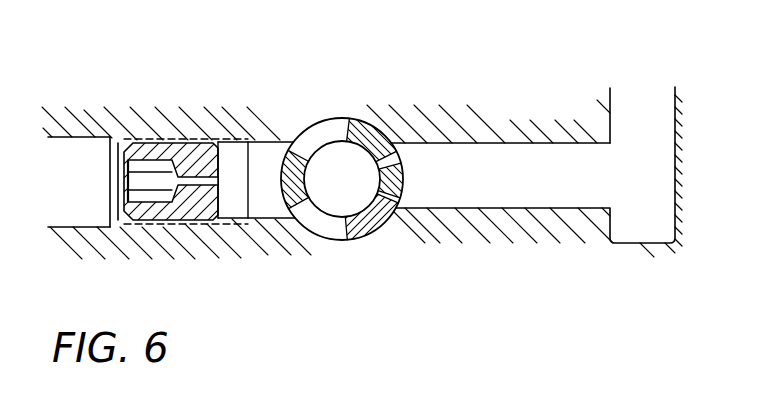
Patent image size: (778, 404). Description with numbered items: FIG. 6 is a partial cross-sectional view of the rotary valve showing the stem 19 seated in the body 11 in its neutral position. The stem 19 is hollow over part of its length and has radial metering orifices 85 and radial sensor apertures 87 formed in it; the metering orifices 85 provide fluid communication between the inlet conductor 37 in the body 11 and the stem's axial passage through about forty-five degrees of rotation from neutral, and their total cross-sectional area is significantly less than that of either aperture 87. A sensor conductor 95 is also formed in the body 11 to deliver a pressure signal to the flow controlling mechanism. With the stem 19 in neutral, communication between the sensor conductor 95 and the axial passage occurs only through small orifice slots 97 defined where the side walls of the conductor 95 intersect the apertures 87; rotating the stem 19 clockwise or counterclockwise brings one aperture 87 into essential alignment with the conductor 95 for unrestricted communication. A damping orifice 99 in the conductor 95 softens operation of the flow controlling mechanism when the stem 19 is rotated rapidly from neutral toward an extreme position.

The body 11 is at (502, 235).
The stem 19 is at (368, 130).
The inlet conductor 37 is at (630, 128).
The metering orifices 85 is at (393, 152).
The sensor apertures 87 is at (333, 138).
The sensor conductor 95 is at (87, 147).
The orifice slots 97 is at (288, 147).
The damping orifice 99 is at (192, 180).